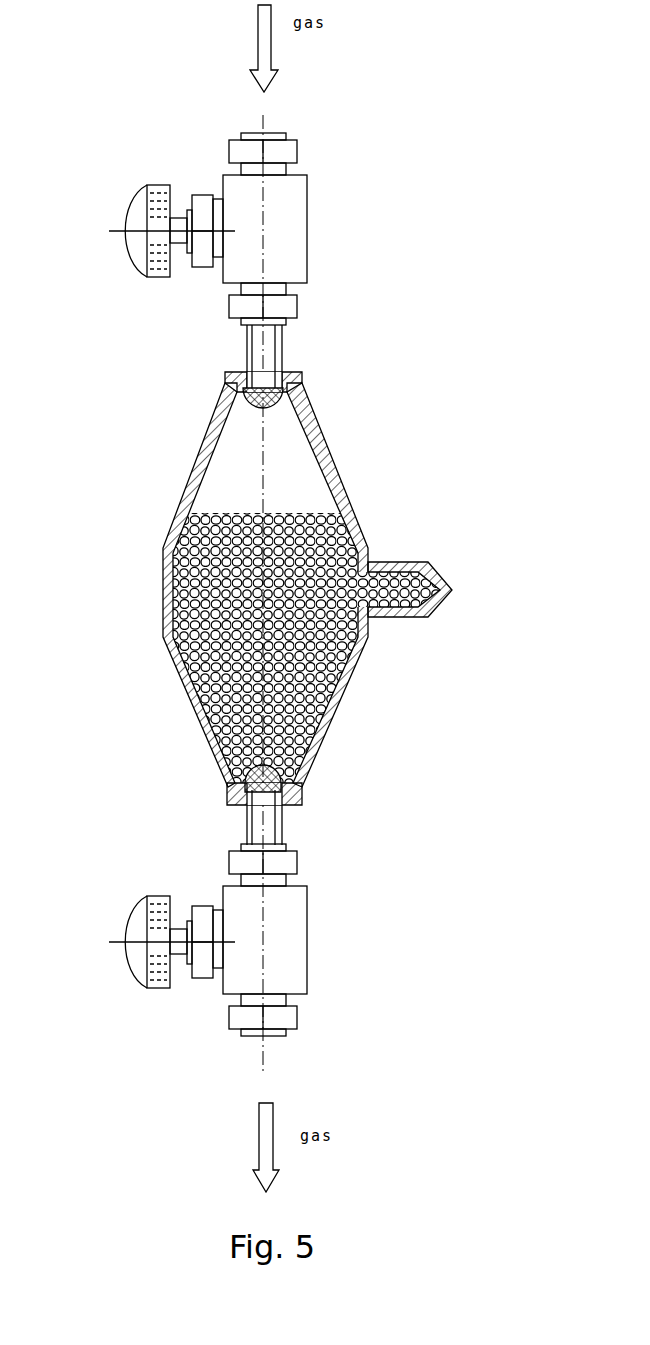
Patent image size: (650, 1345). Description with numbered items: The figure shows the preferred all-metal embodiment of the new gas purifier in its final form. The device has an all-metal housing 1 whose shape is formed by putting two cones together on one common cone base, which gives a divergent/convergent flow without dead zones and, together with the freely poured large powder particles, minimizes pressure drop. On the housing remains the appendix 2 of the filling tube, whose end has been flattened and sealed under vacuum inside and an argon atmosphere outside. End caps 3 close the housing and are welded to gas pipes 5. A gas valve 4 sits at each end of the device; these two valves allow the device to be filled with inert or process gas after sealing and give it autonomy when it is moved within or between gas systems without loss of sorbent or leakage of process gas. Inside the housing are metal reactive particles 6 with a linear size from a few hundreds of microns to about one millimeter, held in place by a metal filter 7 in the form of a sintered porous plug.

The all-metal housing 1 is at (323, 682).
The appendix 2 is at (397, 618).
The end caps 3 is at (285, 375).
The gas valve 4 is at (223, 190).
The gas pipes 5 is at (247, 367).
The metal reactive particles 6 is at (212, 517).
The metal filter 7 is at (267, 790).